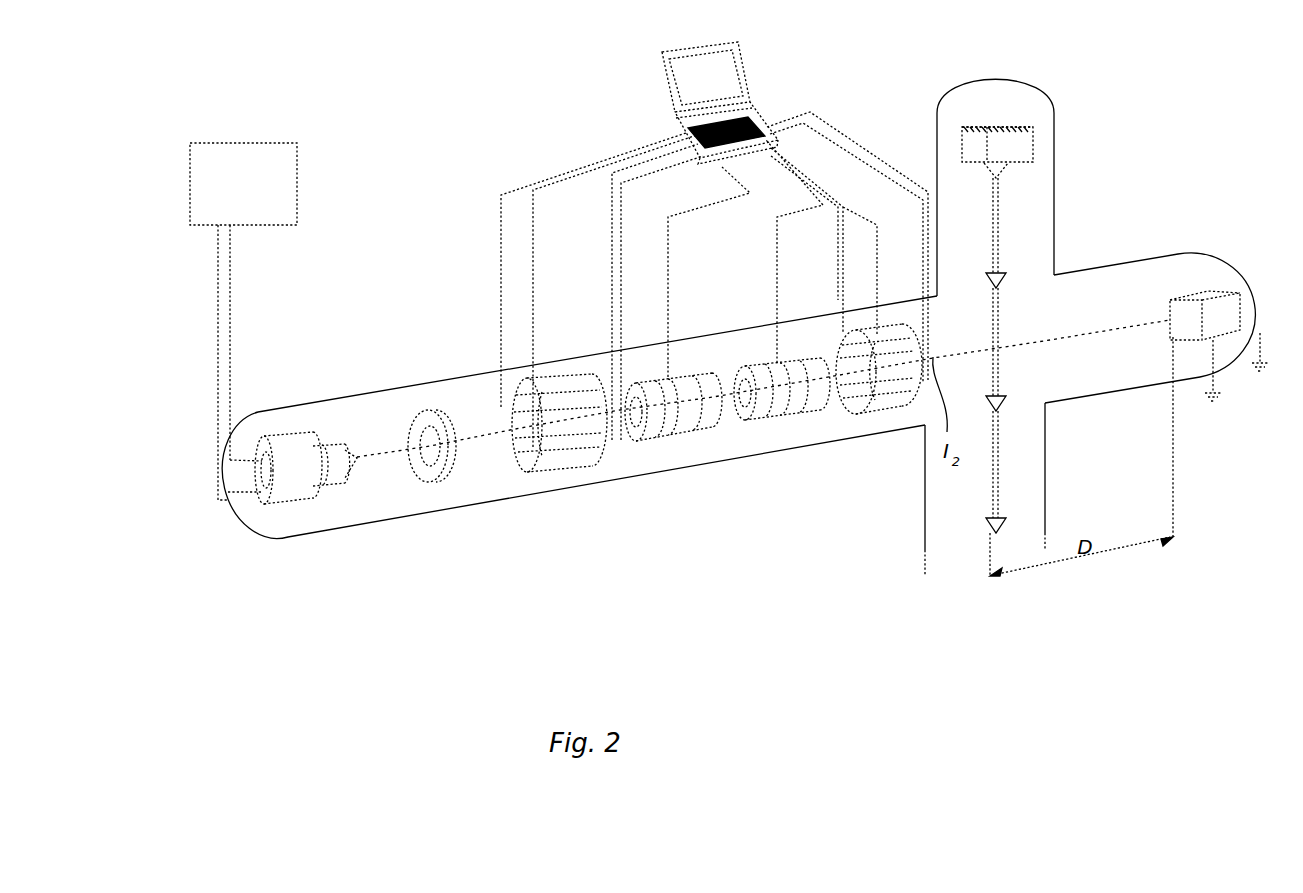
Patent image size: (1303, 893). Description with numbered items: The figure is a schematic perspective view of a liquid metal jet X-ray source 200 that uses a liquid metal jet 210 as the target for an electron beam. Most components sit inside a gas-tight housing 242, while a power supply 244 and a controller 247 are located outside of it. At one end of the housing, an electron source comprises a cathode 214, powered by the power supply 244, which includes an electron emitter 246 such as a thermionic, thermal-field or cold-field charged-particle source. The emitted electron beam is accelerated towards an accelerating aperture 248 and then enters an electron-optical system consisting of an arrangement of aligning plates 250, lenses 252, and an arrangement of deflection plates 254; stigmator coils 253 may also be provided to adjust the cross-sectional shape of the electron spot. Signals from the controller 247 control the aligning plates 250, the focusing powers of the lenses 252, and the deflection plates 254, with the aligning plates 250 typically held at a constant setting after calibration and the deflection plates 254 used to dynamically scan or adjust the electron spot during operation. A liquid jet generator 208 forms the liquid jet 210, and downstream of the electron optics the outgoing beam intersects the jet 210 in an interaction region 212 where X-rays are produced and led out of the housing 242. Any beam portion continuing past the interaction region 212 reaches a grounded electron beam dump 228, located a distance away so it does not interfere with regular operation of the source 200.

The liquid metal jet X-ray source 200 is at (212, 455).
The liquid jet generator 208 is at (1027, 146).
The liquid metal jet 210 is at (1000, 220).
The interaction region 212 is at (1000, 357).
The cathode 214 is at (305, 505).
The electron beam dump 228 is at (1207, 290).
The gas-tight housing 242 is at (375, 394).
The power supply 244 is at (255, 143).
The electron emitter 246 is at (350, 470).
The controller 247 is at (733, 72).
The accelerating aperture 248 is at (432, 410).
The aligning plates 250 is at (577, 380).
The lenses 252 is at (678, 430).
The stigmator coils 253 is at (787, 410).
The deflection plates 254 is at (848, 335).